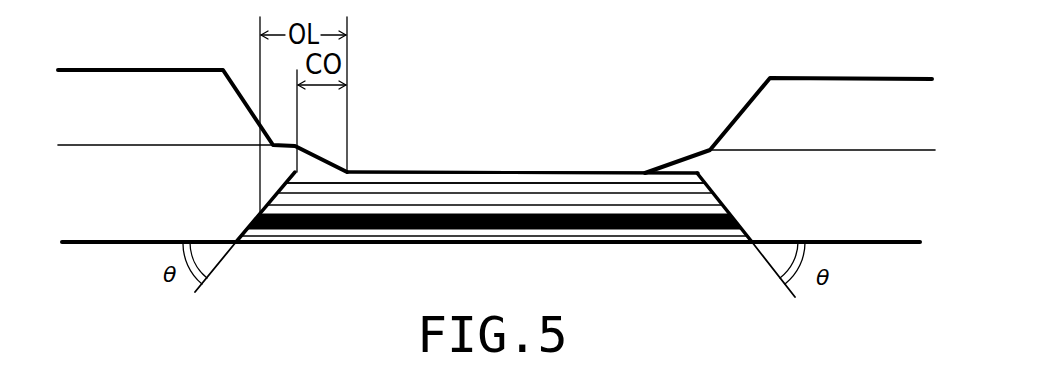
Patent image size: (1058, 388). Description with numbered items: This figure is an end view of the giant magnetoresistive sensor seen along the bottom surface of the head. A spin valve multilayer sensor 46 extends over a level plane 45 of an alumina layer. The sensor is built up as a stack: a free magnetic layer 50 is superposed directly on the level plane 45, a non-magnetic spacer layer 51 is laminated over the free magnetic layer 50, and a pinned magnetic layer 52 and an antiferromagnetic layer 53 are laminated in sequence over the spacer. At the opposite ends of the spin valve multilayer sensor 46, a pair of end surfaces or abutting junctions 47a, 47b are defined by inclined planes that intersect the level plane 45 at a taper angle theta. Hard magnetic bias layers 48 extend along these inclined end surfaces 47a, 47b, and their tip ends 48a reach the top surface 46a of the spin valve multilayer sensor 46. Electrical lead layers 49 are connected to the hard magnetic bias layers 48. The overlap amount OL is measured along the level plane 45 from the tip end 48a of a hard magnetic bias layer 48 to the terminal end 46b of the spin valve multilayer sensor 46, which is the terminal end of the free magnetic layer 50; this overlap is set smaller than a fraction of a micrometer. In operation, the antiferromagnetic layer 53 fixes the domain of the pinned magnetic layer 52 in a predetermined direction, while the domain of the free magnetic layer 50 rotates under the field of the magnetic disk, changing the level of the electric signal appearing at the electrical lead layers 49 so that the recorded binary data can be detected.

The level plane 45 is at (720, 203).
The spin valve multilayer sensor 46 is at (494, 66).
The top surface of the spin valve multilayer sensor 46a is at (420, 170).
The terminal end of the spin valve multilayer sensor 46b is at (260, 215).
The end surface 47a is at (251, 218).
The end surface 47b is at (738, 228).
The hard magnetic bias layer 48 is at (95, 223).
The tip end of the hard magnetic bias layer 48a is at (345, 170).
The electrical lead layer 49 is at (101, 80).
The free magnetic layer 50 is at (473, 207).
The non-magnetic spacer layer 51 is at (515, 207).
The pinned magnetic layer 52 is at (552, 202).
The antiferromagnetic layer 53 is at (602, 192).